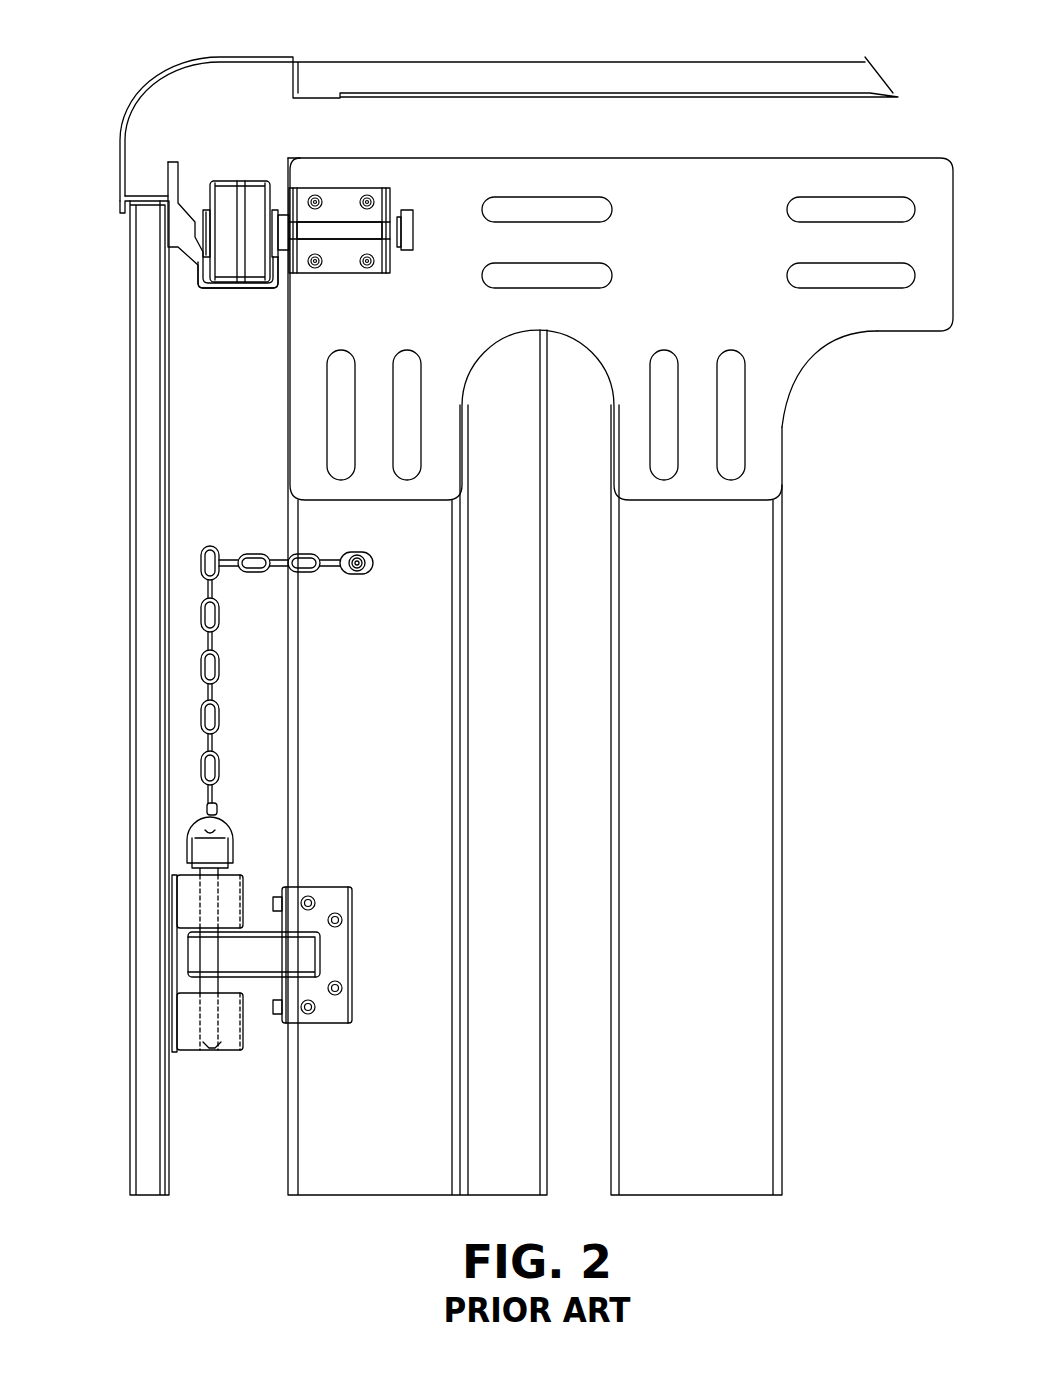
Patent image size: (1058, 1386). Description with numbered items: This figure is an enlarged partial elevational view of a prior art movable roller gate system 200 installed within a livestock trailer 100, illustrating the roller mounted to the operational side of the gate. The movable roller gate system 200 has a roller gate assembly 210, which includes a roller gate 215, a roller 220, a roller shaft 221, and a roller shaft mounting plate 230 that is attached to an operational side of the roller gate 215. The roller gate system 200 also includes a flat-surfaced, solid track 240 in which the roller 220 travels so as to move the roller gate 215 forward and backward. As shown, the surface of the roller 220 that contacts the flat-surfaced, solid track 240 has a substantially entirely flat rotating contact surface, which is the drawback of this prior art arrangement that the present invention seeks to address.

The livestock trailer 100 is at (116, 138).
The movable roller gate system 200 is at (571, 130).
The roller gate assembly 210 is at (270, 163).
The roller gate 215 is at (793, 333).
The roller 220 is at (238, 181).
The roller shaft 221 is at (343, 231).
The roller shaft mounting plate 230 is at (338, 188).
The flat-surfaced, solid track 240 is at (217, 290).